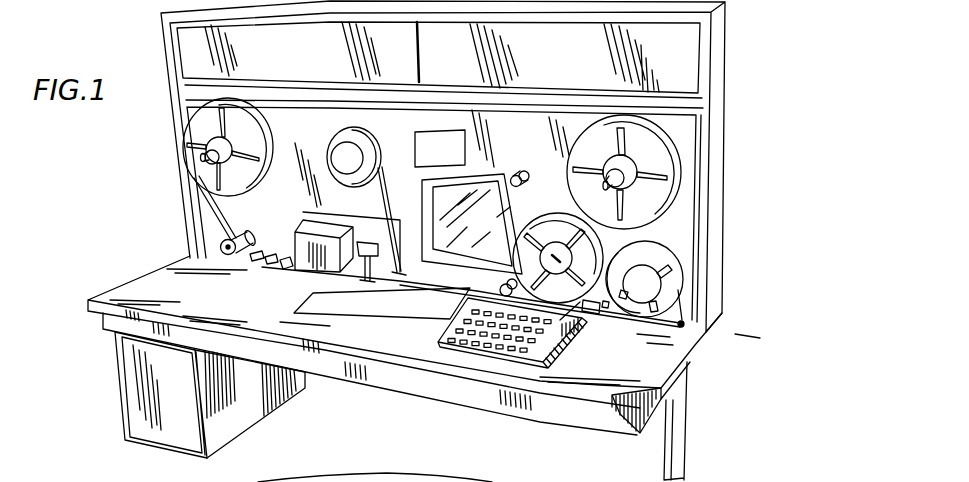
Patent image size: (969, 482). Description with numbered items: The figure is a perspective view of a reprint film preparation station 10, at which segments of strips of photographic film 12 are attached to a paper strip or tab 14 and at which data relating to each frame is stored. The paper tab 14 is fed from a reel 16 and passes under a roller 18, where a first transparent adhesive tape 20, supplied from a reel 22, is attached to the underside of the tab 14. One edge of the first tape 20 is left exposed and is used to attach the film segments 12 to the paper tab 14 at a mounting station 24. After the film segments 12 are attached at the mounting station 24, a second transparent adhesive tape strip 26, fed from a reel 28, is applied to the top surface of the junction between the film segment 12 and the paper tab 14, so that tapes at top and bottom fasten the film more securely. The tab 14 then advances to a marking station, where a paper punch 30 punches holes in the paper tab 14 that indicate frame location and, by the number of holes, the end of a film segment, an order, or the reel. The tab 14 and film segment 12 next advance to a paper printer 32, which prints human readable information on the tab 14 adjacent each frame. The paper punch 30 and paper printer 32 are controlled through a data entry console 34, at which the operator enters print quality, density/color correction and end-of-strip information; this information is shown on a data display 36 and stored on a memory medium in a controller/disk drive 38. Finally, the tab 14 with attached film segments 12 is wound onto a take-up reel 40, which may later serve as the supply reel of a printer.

The reprint film preparation station 10 is at (748, 181).
The photographic film segment 12 is at (226, 223).
The paper tab 14 is at (630, 252).
The reel 16 is at (543, 222).
The roller 18 is at (596, 318).
The first transparent adhesive tape 20 is at (633, 323).
The reel 22 is at (677, 287).
The mounting station 24 is at (430, 293).
The second transparent adhesive tape strip 26 is at (390, 216).
The reel 28 is at (370, 146).
The paper punch 30 is at (320, 292).
The paper printer 32 is at (290, 266).
The data entry console 34 is at (497, 347).
The data display 36 is at (483, 200).
The controller/disk drive 38 is at (165, 430).
The take-up reel 40 is at (247, 135).